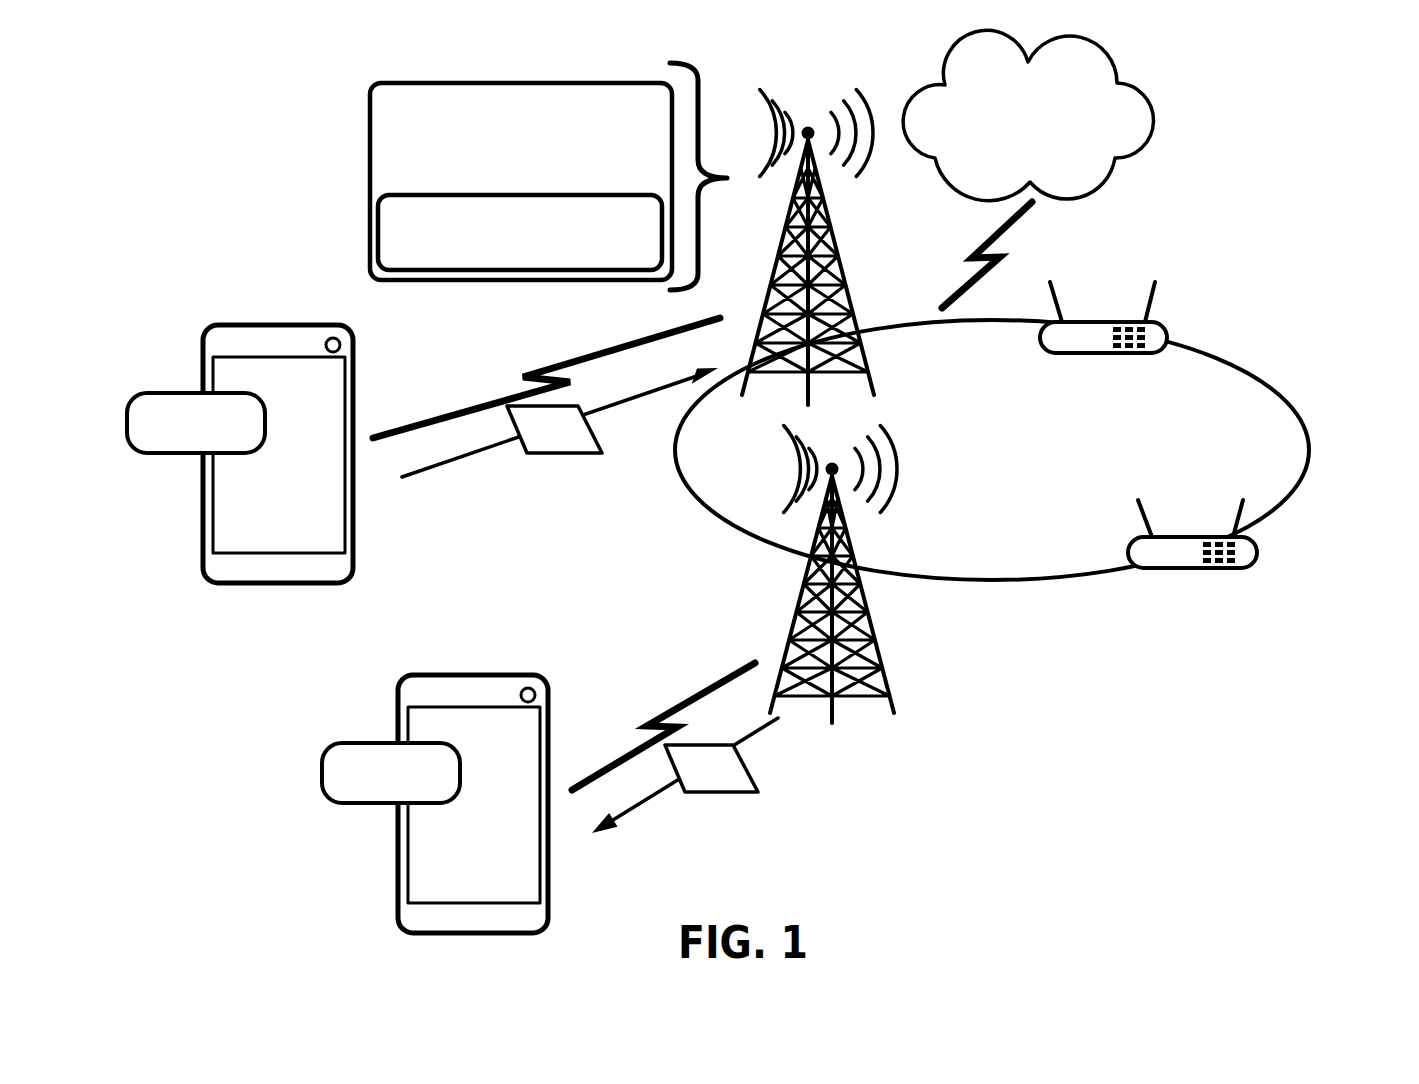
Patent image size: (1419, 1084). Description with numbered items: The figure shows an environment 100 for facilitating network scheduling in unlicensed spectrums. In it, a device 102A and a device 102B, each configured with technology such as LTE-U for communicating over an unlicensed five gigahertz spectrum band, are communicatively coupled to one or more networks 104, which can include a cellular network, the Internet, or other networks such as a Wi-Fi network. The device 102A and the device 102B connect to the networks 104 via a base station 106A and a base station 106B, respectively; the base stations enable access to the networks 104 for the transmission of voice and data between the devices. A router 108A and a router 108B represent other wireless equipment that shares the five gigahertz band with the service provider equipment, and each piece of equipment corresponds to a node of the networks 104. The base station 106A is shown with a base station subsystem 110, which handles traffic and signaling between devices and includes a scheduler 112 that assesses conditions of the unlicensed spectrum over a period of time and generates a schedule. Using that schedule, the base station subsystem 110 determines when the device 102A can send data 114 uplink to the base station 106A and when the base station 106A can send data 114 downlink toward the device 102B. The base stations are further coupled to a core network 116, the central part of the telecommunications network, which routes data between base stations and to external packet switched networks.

The environment 100 is at (1312, 96).
The device 102A is at (217, 322).
The device 102B is at (420, 672).
The one or more networks 104 is at (1083, 462).
The base station 106A is at (840, 265).
The base station 106B is at (863, 623).
The router 108A is at (1167, 327).
The router 108B is at (1257, 552).
The base station subsystem 110 is at (537, 182).
The scheduler 112 is at (537, 259).
The data 114 is at (575, 575).
The core network 116 is at (1048, 147).